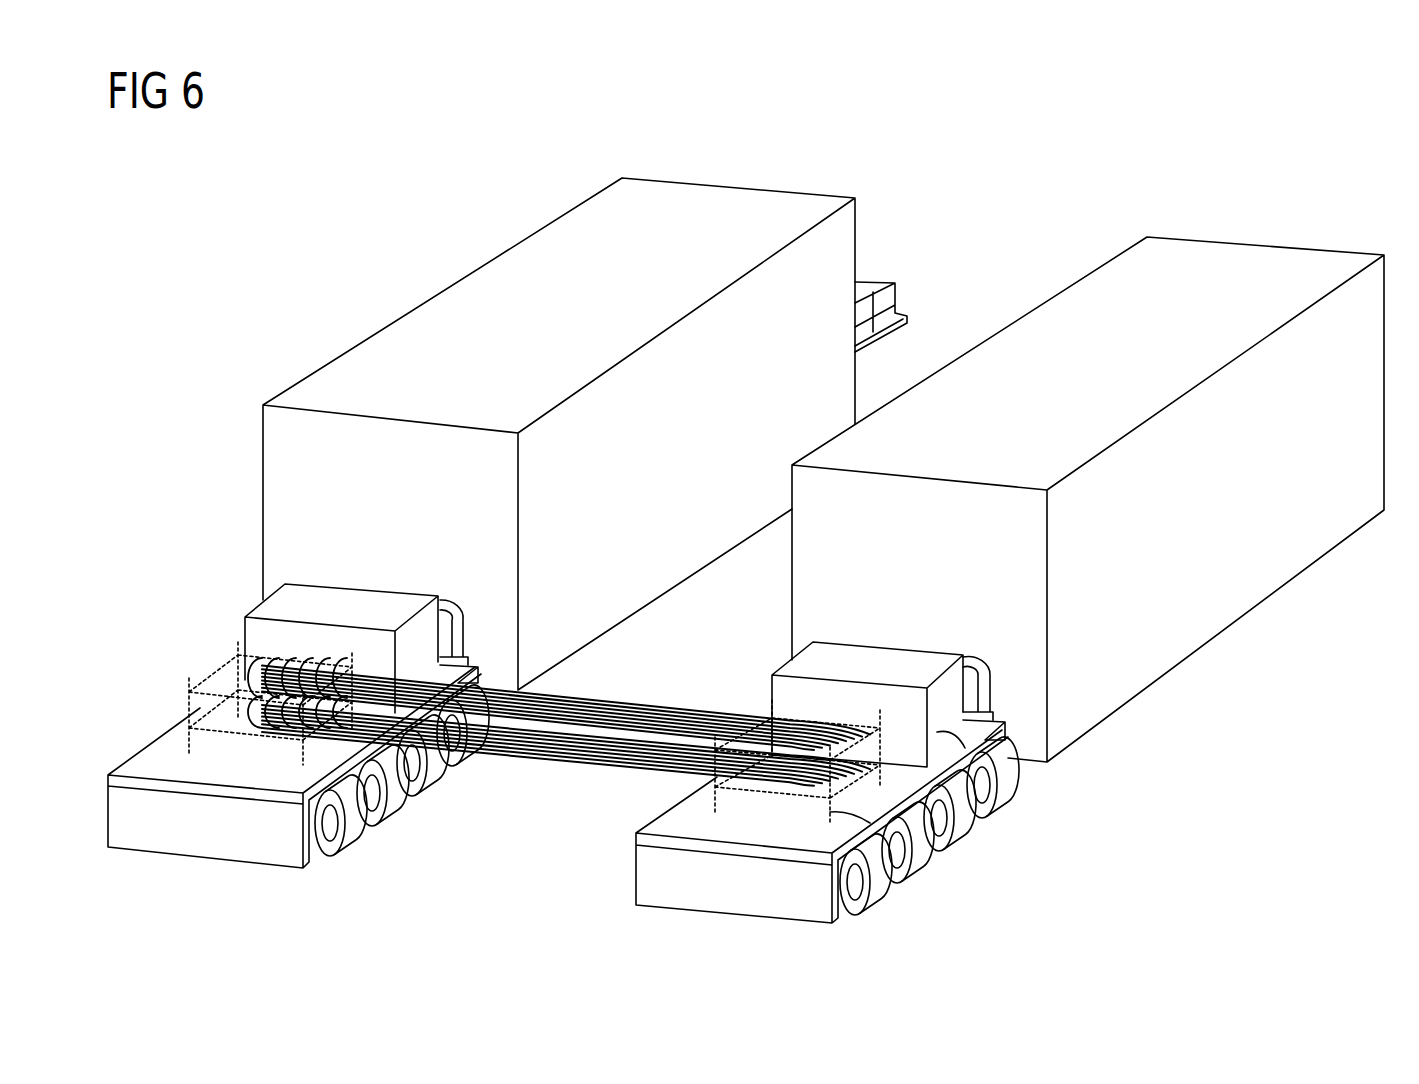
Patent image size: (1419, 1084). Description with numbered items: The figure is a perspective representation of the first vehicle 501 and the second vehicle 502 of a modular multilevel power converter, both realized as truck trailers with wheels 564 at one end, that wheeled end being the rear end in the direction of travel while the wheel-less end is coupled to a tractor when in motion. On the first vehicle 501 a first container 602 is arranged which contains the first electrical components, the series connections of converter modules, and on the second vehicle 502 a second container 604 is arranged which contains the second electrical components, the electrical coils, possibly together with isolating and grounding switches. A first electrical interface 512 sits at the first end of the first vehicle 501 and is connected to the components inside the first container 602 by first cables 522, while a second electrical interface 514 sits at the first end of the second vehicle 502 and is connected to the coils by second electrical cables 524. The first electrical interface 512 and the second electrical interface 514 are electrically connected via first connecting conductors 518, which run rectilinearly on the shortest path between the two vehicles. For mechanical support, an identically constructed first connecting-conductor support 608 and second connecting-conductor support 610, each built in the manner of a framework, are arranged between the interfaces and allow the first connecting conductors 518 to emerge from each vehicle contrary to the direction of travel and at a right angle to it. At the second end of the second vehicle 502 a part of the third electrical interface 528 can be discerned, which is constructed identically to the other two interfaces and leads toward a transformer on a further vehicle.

The first vehicle 501 is at (1335, 205).
The second vehicle 502 is at (834, 164).
The first electrical interface 512 is at (998, 800).
The second electrical interface 514 is at (287, 612).
The first connecting conductors 518 is at (696, 710).
The first cables 522 is at (990, 690).
The second electrical cables 524 is at (465, 628).
The third electrical interface 528 is at (870, 280).
The wheels 564 is at (343, 843).
The first container 602 is at (1243, 258).
The second container 604 is at (733, 198).
The first connecting-conductor support 608 is at (910, 860).
The second connecting-conductor support 610 is at (213, 668).